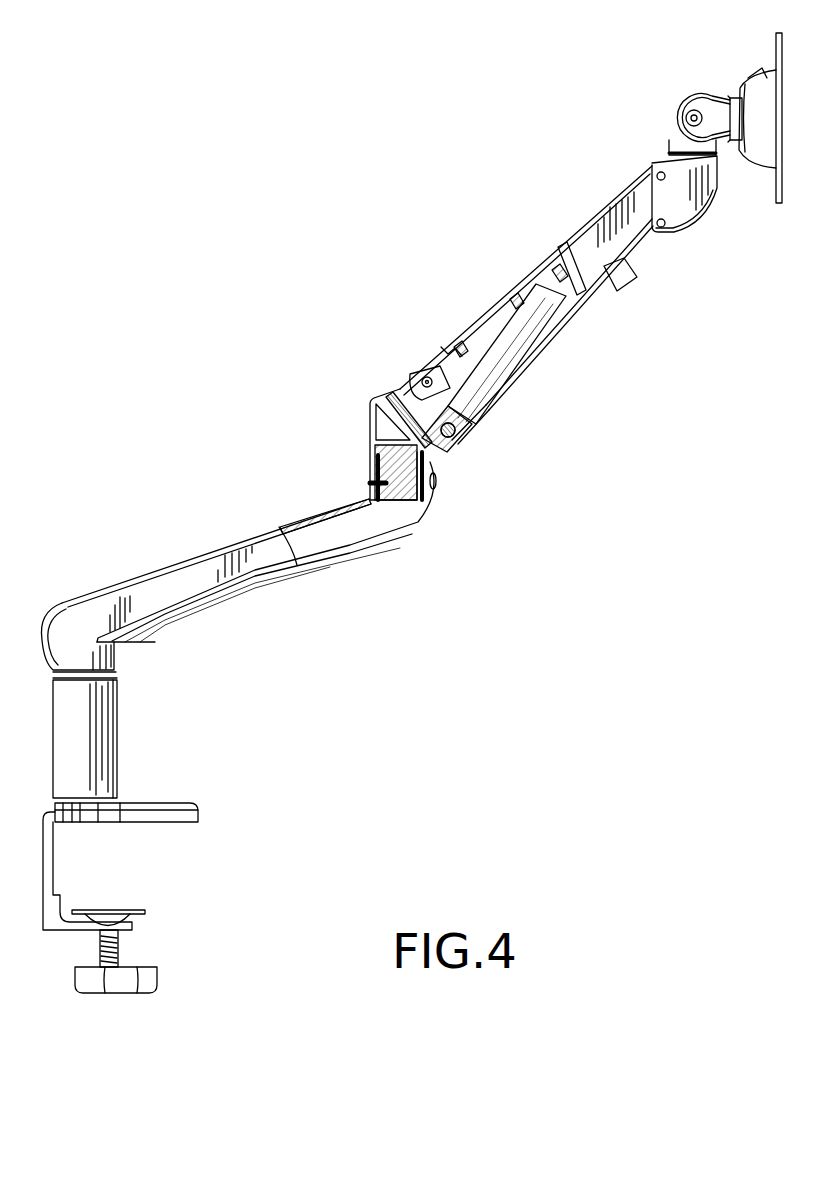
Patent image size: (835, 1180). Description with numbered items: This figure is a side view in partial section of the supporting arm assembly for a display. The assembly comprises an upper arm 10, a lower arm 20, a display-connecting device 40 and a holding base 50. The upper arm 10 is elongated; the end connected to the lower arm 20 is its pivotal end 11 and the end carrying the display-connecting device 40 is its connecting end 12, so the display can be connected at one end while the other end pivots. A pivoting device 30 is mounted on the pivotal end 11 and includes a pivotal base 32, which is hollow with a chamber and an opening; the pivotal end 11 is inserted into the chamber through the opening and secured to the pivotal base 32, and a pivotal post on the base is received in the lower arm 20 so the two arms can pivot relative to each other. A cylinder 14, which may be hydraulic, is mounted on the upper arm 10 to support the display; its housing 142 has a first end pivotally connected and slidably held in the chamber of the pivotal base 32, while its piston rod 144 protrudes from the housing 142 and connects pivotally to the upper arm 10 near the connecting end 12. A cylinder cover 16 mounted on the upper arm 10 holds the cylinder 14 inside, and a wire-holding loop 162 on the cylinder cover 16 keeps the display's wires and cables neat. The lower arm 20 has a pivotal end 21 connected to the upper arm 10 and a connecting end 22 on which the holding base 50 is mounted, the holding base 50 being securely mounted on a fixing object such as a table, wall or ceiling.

The upper arm 10 is at (552, 196).
The pivotal end 11 is at (437, 357).
The connecting end 12 is at (663, 193).
The cylinder 14 is at (532, 370).
The housing 142 is at (478, 403).
The piston rod 144 is at (566, 280).
The cylinder cover 16 is at (573, 313).
The wire-holding loop 162 is at (626, 278).
The lower arm 20 is at (207, 528).
The pivotal end 21 is at (436, 482).
The connecting end 22 is at (67, 630).
The pivoting device 30 is at (352, 388).
The pivotal base 32 is at (368, 430).
The display-connecting device 40 is at (672, 74).
The holding base 50 is at (230, 793).